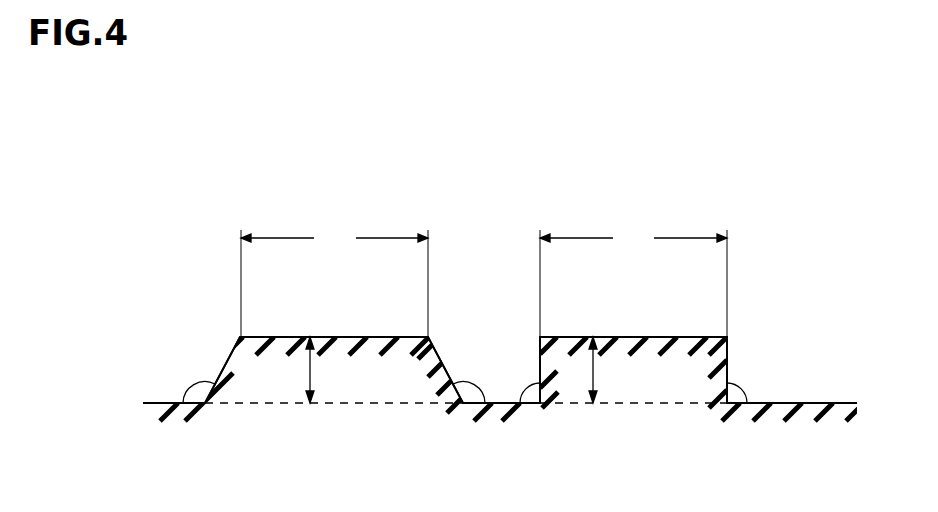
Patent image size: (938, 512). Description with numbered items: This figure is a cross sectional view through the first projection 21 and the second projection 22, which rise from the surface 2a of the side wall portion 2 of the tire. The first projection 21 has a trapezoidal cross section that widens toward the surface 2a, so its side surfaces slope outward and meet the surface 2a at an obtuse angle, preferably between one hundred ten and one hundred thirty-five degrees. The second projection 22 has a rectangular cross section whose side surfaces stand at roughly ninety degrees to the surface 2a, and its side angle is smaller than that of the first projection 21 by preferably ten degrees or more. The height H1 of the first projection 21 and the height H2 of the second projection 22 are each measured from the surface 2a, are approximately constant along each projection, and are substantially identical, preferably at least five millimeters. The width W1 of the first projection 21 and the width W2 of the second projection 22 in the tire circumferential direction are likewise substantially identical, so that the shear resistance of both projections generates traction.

The side wall portion 2 is at (127, 345).
The first projection 21 is at (408, 337).
The second projection 22 is at (703, 337).
The surface 2a is at (827, 403).
The width of the first projection W1 is at (334, 280).
The width of the second projection W2 is at (633, 280).
The height of the first projection H1 is at (311, 370).
The height of the second projection H2 is at (594, 370).